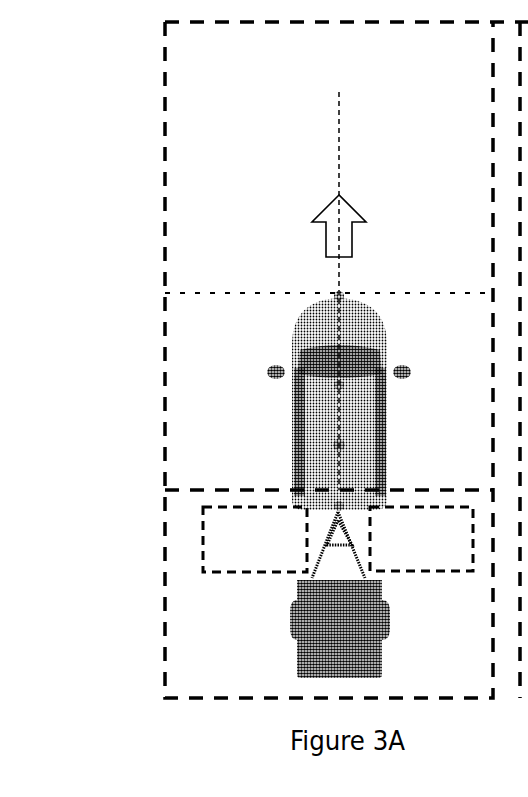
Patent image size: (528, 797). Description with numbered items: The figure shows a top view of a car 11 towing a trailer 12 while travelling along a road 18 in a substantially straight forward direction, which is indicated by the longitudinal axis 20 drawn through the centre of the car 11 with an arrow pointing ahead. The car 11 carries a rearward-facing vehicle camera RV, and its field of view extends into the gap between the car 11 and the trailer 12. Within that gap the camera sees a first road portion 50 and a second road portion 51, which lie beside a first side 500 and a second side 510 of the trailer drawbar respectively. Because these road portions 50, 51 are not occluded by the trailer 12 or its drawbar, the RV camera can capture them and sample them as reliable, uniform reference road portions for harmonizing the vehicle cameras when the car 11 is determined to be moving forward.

The road 18 is at (142, 118).
The longitudinal axis 20 is at (335, 286).
The car 11 is at (282, 263).
The first side of the trailer drawbar 500 is at (317, 519).
The second side of the trailer drawbar 510 is at (364, 519).
The first road portion 50 is at (255, 539).
The second road portion 51 is at (421, 539).
The trailer 12 is at (281, 675).